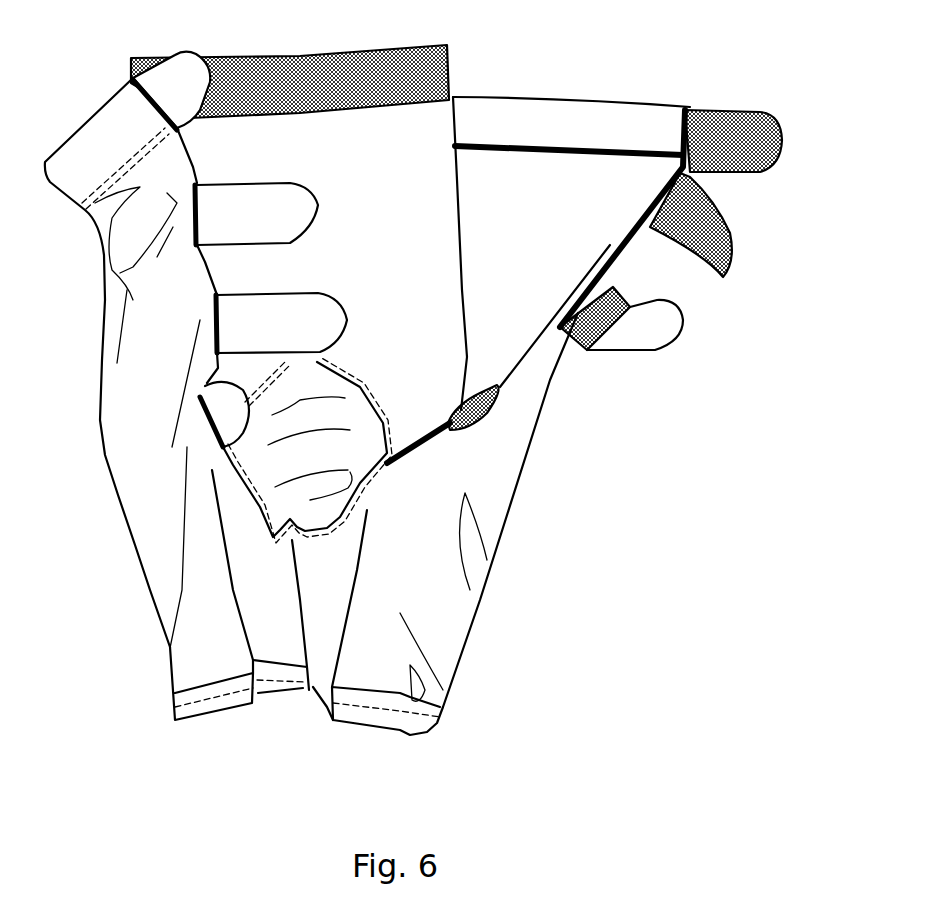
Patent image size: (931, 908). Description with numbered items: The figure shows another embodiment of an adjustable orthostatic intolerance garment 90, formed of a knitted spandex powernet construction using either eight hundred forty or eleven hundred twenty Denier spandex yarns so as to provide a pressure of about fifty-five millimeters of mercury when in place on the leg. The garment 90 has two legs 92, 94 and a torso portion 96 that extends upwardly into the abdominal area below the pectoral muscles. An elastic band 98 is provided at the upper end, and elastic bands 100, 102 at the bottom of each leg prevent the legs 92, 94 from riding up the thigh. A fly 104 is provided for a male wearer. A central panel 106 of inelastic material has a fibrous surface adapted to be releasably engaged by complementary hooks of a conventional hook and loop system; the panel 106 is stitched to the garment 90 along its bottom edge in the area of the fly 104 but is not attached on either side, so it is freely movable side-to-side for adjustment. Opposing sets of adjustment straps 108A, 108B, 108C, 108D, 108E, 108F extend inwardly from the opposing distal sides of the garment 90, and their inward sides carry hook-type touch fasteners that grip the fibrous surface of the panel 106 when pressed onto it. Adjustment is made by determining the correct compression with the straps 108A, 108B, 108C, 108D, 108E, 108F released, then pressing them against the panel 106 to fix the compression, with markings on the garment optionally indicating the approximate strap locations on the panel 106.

The adjustable orthostatic intolerance garment 90 is at (712, 187).
The leg 92 is at (193, 650).
The leg 94 is at (387, 663).
The torso portion 96 is at (563, 203).
The elastic band 98 is at (502, 118).
The elastic band 100 is at (210, 705).
The elastic band 102 is at (413, 710).
The fly 104 is at (267, 460).
The central panel 106 is at (400, 203).
The adjustment strap 108A is at (713, 245).
The adjustment strap 108B is at (247, 203).
The adjustment strap 108C is at (673, 325).
The adjustment strap 108D is at (257, 320).
The adjustment strap 108E is at (493, 408).
The adjustment strap 108F is at (223, 410).